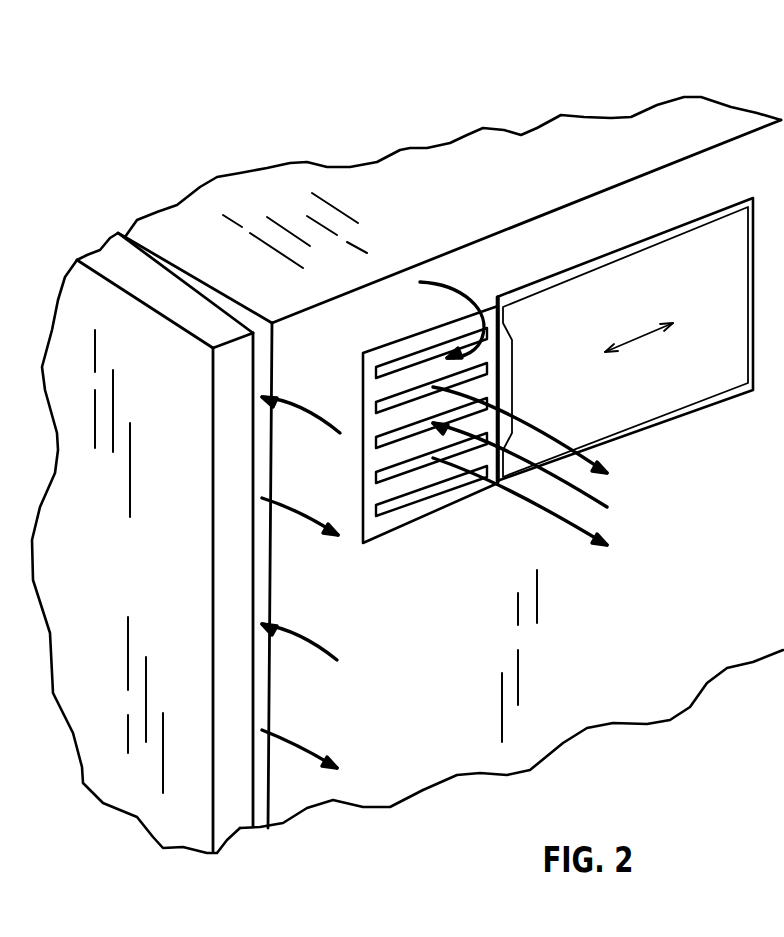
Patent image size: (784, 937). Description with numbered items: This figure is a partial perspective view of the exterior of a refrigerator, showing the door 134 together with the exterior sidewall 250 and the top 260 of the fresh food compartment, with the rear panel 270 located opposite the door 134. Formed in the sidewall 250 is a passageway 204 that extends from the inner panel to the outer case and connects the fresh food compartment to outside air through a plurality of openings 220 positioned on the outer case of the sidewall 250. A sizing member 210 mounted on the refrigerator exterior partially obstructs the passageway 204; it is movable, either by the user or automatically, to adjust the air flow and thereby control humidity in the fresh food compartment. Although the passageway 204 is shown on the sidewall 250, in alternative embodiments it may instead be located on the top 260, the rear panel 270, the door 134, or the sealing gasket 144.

The door 134 is at (114, 582).
The sealing gasket 144 is at (258, 822).
The passageway 204 is at (412, 467).
The sizing member 210 is at (675, 393).
The openings 220 is at (447, 495).
The exterior sidewall 250 is at (600, 645).
The top 260 is at (535, 184).
The rear panel 270 is at (732, 107).